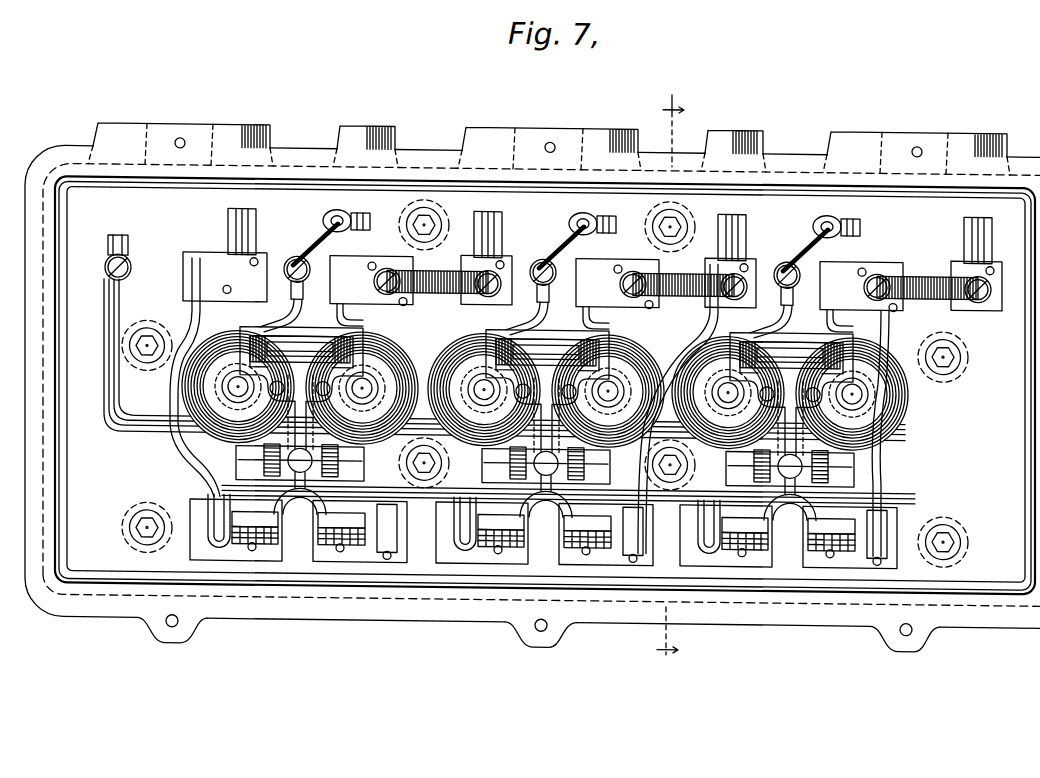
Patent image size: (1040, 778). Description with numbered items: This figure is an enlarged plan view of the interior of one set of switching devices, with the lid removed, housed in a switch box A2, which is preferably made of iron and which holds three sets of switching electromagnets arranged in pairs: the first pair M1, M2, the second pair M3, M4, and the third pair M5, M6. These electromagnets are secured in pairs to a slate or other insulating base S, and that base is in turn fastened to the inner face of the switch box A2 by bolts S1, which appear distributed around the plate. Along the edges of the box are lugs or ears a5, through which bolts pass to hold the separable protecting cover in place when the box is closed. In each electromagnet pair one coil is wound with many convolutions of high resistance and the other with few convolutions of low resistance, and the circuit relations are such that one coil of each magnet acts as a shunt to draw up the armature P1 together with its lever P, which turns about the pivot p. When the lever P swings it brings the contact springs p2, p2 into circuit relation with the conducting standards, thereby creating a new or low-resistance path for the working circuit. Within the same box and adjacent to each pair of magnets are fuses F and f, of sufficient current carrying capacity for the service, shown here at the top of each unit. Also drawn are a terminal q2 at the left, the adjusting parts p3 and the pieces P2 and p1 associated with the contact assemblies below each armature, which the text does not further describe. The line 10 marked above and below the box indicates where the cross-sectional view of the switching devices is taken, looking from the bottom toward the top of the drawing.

The switch box A2 is at (1006, 624).
The lugs or ears a5 is at (168, 630).
The insulating base S is at (546, 384).
The bolts S1 is at (150, 332).
The terminal binding post q2 is at (27, 262).
The switching electromagnet M1 is at (200, 341).
The switching electromagnet M2 is at (396, 342).
The switching electromagnet M3 is at (446, 342).
The switching electromagnet M4 is at (639, 344).
The switching electromagnet M5 is at (686, 344).
The switching electromagnet M6 is at (875, 348).
The armature P1 is at (403, 367).
The pivot p is at (302, 350).
The lever P is at (551, 403).
The adjusting spindle p3 is at (841, 493).
The contact spring P2 is at (300, 499).
The contact piece p1 is at (262, 533).
The contact springs p2 is at (257, 551).
The fuse f is at (320, 242).
The fuse F is at (682, 285).
The section line 10 is at (668, 378).